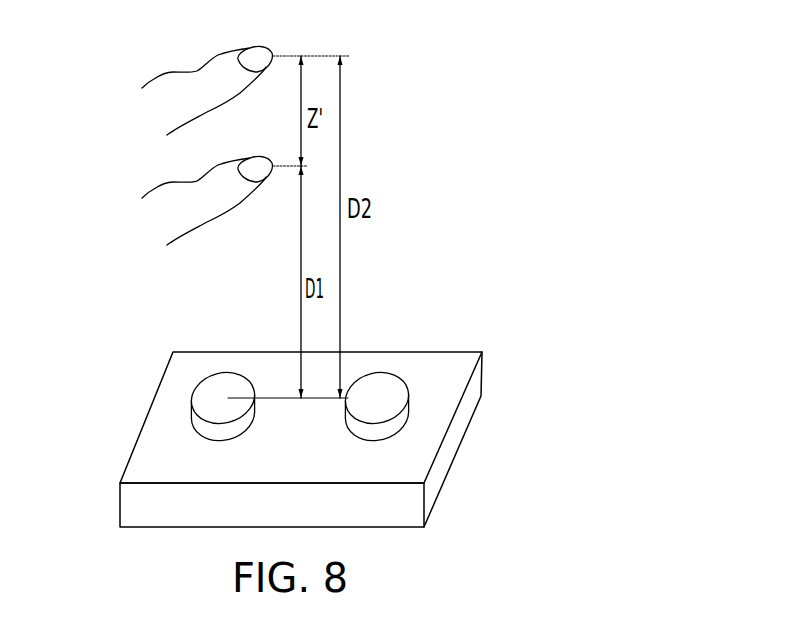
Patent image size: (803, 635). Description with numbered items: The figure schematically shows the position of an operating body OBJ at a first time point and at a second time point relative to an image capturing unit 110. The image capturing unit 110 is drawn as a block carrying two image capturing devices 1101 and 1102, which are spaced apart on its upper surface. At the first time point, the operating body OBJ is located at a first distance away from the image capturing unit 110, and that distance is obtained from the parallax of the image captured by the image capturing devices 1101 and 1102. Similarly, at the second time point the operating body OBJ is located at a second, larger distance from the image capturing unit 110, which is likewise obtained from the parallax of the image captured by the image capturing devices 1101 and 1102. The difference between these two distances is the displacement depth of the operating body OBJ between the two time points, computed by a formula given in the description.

The image capturing unit 110 is at (118, 510).
The image capturing device 1101 is at (233, 390).
The image capturing device 1102 is at (378, 393).
The operating body OBJ is at (142, 88).